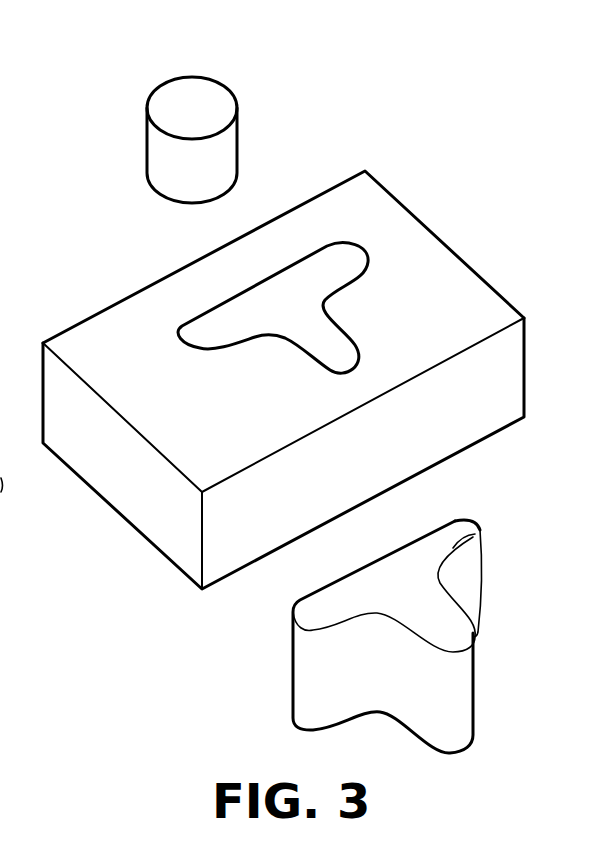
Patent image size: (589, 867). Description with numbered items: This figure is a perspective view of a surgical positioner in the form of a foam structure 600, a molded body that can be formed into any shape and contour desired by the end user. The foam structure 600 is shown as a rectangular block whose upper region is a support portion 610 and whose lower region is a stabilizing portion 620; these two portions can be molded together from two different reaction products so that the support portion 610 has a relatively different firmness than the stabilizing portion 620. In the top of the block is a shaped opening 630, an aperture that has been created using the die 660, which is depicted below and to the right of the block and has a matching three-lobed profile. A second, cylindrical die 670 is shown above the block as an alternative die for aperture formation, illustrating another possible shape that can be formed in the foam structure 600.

The foam structure 600 is at (298, 364).
The support portion 610 is at (393, 243).
The stabilizing portion 620 is at (443, 438).
The shaped opening 630 is at (322, 355).
The die 660 is at (480, 530).
The die 670 is at (178, 117).